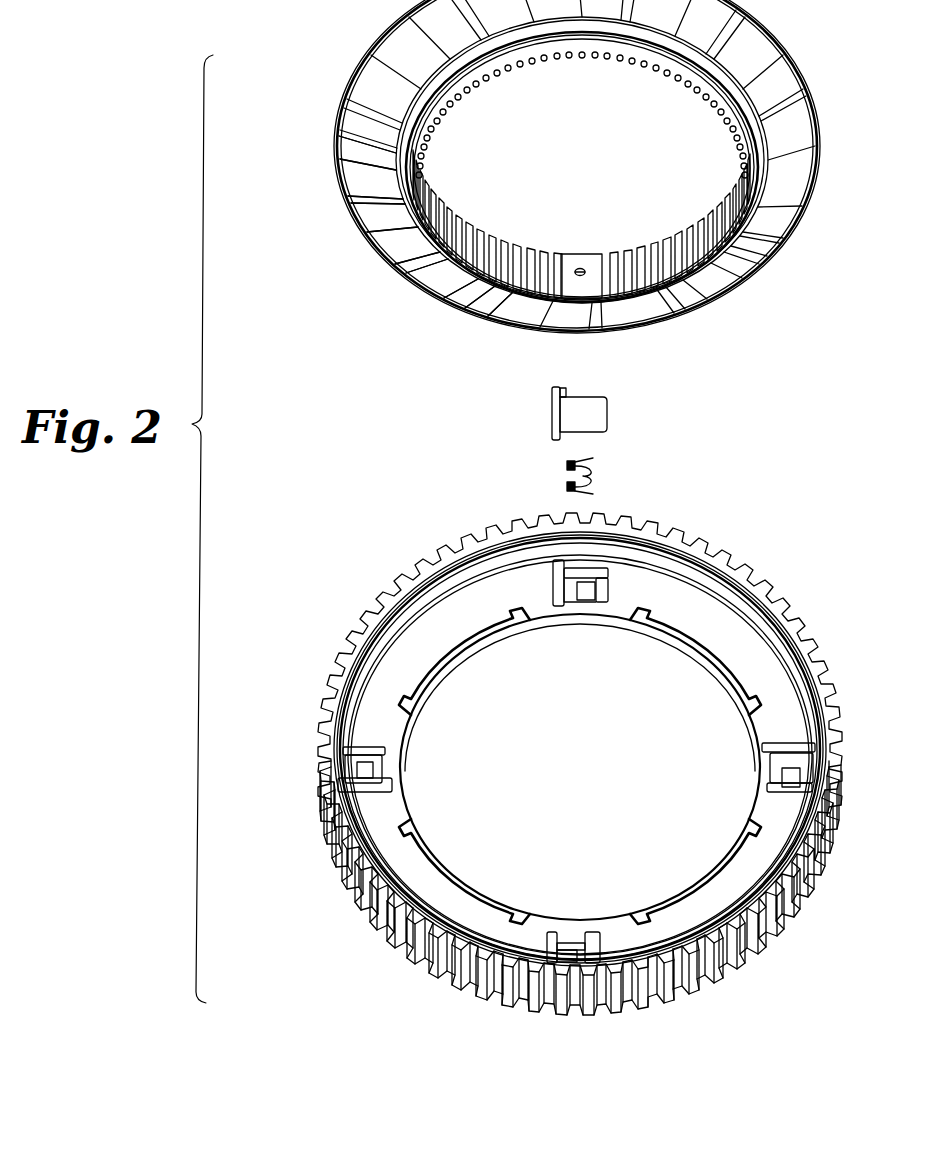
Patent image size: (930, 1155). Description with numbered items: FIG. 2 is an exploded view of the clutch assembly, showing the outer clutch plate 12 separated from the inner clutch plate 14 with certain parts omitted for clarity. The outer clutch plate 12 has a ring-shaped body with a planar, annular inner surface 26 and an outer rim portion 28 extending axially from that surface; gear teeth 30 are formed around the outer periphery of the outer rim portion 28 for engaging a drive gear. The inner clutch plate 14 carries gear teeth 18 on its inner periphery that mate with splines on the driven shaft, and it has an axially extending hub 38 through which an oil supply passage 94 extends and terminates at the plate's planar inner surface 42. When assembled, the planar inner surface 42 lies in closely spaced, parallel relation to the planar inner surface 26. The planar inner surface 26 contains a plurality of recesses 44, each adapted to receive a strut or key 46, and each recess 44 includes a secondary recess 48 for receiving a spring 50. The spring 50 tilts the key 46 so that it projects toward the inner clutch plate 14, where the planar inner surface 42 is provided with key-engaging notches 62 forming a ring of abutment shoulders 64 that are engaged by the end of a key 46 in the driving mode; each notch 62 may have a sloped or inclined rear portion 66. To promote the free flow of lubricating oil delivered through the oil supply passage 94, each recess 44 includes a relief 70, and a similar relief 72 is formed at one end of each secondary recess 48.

The outer clutch plate 12 is at (535, 779).
The inner clutch plate 14 is at (440, 312).
The gear teeth 18 is at (537, 257).
The planar annular inner surface 26 is at (390, 812).
The outer rim portion 28 is at (330, 863).
The gear teeth 30 is at (603, 1013).
The hub 38 is at (538, 48).
The planar inner surface 42 is at (360, 173).
The recess 44 is at (770, 760).
The key 46 is at (607, 418).
The secondary recess 48 is at (773, 768).
The spring 50 is at (567, 467).
The key-engaging notch 62 is at (370, 207).
The abutment shoulder 64 is at (372, 222).
The inclined rear portion 66 is at (368, 190).
The relief 70 is at (358, 760).
The relief 72 is at (362, 775).
The oil supply passage 94 is at (580, 270).